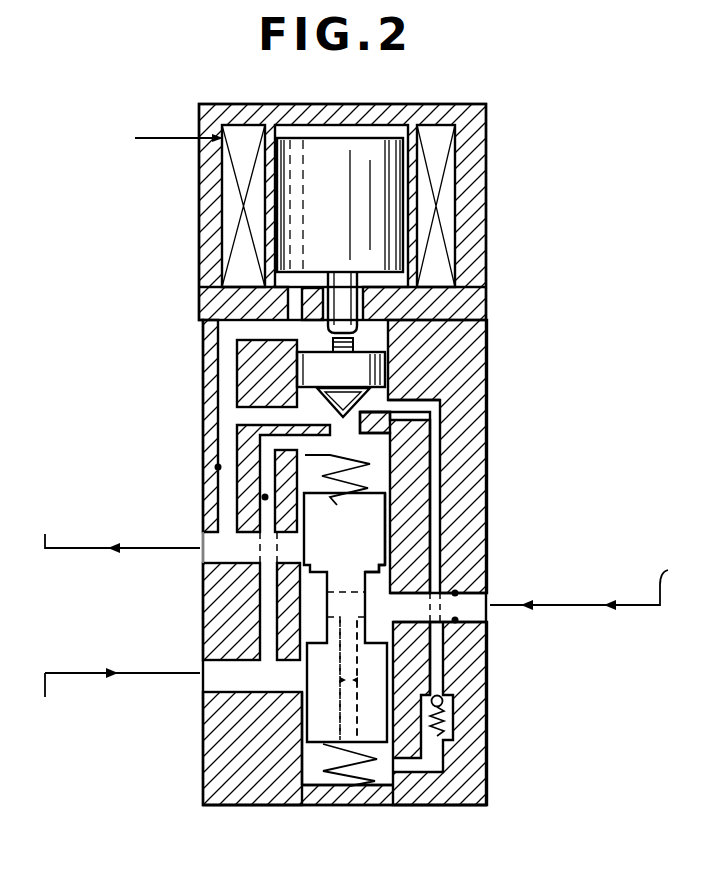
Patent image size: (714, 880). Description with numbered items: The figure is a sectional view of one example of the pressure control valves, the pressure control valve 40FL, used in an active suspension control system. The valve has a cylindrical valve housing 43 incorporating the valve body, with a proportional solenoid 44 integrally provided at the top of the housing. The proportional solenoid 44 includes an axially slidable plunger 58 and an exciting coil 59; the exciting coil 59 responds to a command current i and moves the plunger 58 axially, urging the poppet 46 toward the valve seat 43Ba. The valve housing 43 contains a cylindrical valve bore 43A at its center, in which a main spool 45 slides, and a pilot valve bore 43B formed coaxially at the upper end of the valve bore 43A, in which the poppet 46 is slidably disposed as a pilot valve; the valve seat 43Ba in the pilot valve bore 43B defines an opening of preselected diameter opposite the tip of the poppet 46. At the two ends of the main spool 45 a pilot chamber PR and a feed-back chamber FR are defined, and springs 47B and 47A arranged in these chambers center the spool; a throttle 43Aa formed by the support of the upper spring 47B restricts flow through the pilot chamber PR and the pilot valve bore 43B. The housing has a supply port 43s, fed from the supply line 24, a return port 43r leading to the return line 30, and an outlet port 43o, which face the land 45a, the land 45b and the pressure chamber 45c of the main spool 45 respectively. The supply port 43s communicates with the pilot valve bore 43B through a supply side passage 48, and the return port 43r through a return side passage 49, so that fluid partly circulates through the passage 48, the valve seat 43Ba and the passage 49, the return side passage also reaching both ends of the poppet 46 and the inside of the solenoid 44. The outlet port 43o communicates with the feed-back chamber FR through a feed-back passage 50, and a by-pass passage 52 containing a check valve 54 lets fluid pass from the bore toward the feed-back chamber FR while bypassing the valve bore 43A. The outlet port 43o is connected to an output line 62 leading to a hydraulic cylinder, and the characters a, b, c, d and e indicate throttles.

The proportional solenoid 44 is at (486, 207).
The exciting coil 59 is at (224, 203).
The plunger 58 is at (365, 148).
The throttle e is at (293, 199).
The exciting current i is at (170, 138).
The pressure control valve 40FL is at (165, 290).
The valve housing 43 is at (455, 497).
The pilot valve bore 43B is at (390, 335).
The valve seat 43Ba is at (392, 402).
The valve bore 43A is at (493, 650).
The throttle 43Aa is at (425, 438).
The outlet port 43o is at (467, 608).
The output line 62 is at (567, 577).
The throttle c is at (457, 620).
The throttle d is at (453, 697).
The by-pass passage 52 is at (447, 702).
The check valve 54 is at (447, 722).
The poppet 46 is at (383, 368).
The return side passage 49 is at (236, 441).
The return port 43r is at (228, 538).
The main spool 45 is at (324, 602).
The supply side passage 48 is at (262, 634).
The feed-back passage 50 is at (312, 731).
The land 45a is at (302, 752).
The pilot chamber PR is at (378, 452).
The spring 47B is at (345, 617).
The land 45b is at (378, 538).
The pressure chamber 45c is at (380, 568).
The supply port 43s is at (343, 712).
The spring 47A is at (374, 780).
The feed-back chamber FR is at (316, 784).
The return line 30 is at (70, 533).
The supply line 24 is at (112, 699).
The throttle b is at (216, 467).
The throttle a is at (263, 497).